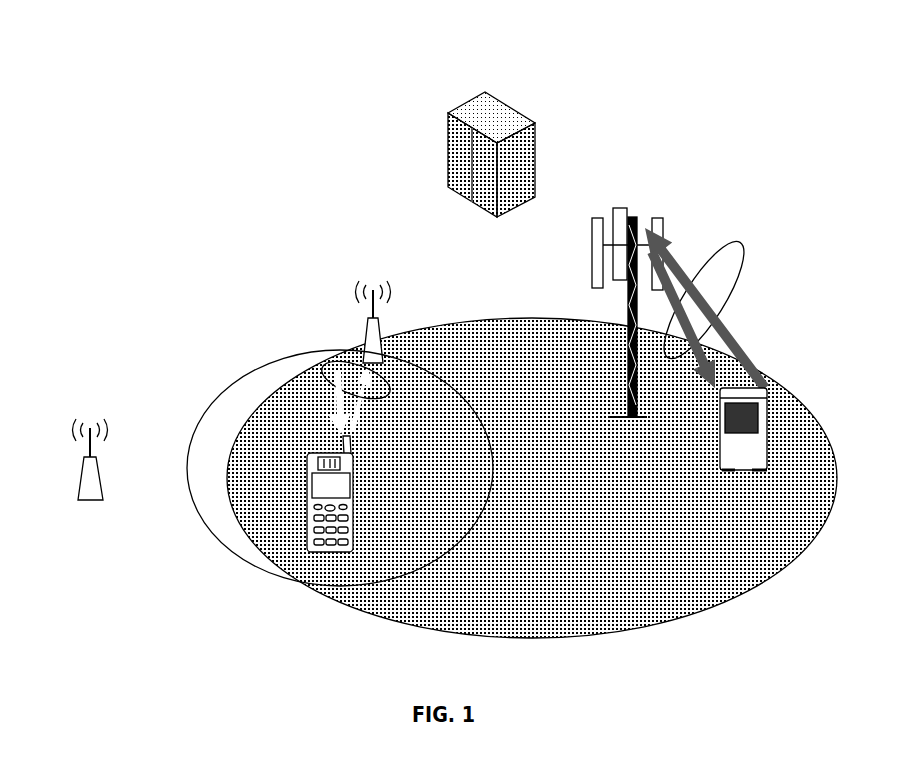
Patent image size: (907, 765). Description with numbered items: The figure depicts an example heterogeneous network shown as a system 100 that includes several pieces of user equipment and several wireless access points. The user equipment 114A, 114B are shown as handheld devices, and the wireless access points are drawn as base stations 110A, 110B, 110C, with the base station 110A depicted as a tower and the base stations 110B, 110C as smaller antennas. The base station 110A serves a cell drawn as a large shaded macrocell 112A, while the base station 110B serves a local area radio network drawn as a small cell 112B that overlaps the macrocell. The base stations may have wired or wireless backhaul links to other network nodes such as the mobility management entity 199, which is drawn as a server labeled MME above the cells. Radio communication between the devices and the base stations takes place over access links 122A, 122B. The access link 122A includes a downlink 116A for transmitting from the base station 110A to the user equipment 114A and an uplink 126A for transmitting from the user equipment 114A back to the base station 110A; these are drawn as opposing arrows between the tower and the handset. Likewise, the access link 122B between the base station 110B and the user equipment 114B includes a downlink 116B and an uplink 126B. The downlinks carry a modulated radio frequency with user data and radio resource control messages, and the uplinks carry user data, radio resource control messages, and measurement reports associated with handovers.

The system 100 is at (603, 35).
The mobility management entity 199 is at (535, 124).
The base station 110A is at (695, 203).
The base station 110B is at (430, 283).
The base station 110C is at (148, 423).
The macrocell 112A is at (713, 607).
The small cell 112B is at (220, 545).
The user equipment 114A is at (762, 427).
The user equipment 114B is at (326, 553).
The downlink 116A is at (697, 372).
The downlink 116B is at (335, 380).
The access link 122A is at (723, 243).
The access link 122B is at (322, 365).
The uplink 126A is at (697, 370).
The uplink 126B is at (383, 403).